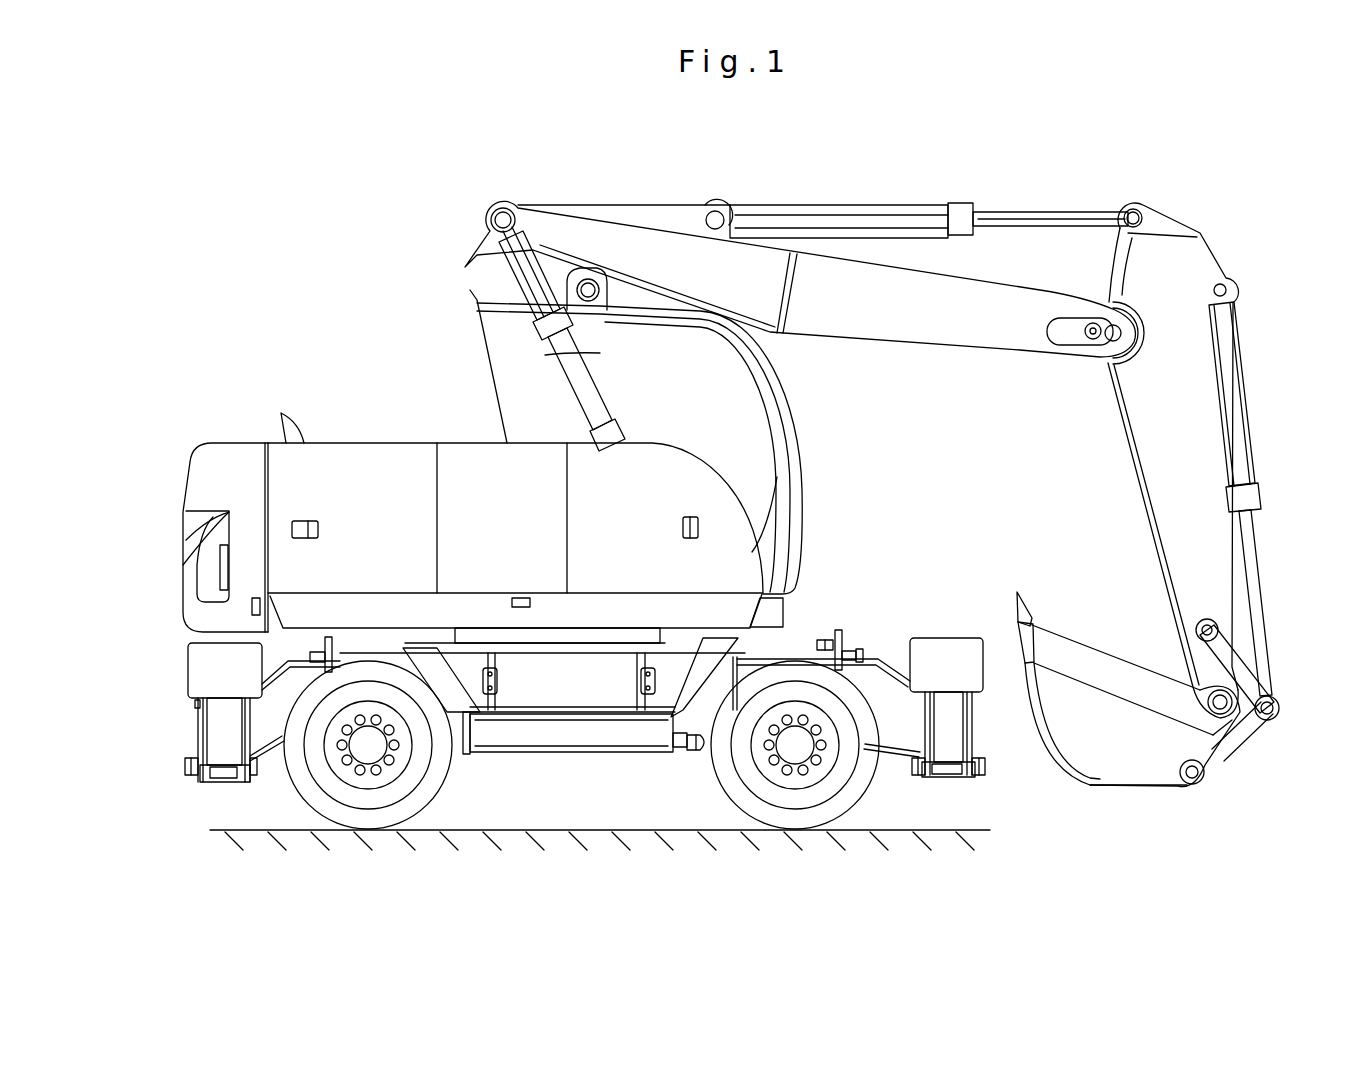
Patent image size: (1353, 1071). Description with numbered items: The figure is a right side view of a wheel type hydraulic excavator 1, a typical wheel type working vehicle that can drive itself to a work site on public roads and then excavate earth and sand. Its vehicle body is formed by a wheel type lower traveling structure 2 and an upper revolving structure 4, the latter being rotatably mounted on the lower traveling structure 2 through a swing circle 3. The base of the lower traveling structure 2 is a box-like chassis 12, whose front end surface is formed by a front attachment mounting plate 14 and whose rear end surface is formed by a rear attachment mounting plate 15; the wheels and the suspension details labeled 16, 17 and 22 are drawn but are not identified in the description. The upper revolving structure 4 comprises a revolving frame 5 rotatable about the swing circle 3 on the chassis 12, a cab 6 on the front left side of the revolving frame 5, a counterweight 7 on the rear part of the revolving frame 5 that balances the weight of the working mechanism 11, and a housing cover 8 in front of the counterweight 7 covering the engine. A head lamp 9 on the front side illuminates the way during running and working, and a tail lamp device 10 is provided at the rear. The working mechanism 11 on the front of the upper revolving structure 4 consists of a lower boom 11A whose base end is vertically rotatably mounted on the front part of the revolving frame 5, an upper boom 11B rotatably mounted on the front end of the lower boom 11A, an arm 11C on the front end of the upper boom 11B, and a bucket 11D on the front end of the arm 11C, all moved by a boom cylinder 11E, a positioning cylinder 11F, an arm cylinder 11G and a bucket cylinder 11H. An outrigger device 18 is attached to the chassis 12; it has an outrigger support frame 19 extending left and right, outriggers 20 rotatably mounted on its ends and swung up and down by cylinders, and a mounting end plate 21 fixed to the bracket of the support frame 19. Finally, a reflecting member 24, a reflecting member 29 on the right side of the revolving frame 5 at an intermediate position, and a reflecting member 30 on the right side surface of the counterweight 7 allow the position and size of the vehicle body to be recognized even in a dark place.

The wheel type hydraulic excavator 1 is at (446, 298).
The wheel type lower traveling structure 2 is at (543, 762).
The swing circle 3 is at (585, 632).
The upper revolving structure 4 is at (358, 412).
The revolving frame 5 is at (615, 613).
The cab 6 is at (752, 418).
The counterweight 7 is at (244, 468).
The housing cover 8 is at (389, 462).
The head lamp 9 is at (783, 600).
The tail lamp device 10 is at (220, 562).
The working mechanism 11 is at (860, 200).
The lower boom 11A is at (505, 338).
The upper boom 11B is at (920, 322).
The arm 11C is at (1160, 480).
The bucket 11D is at (1117, 672).
The boom cylinder 11E is at (558, 362).
The positioning cylinder 11F is at (600, 353).
The arm cylinder 11G is at (962, 203).
The bucket cylinder 11H is at (1237, 380).
The chassis 12 is at (700, 720).
The front attachment mounting plate 14 is at (843, 650).
The rear attachment mounting plate 15 is at (330, 648).
The rear wheel 16 is at (792, 815).
The front wheel 17 is at (370, 795).
The outrigger device 18 is at (965, 635).
The outrigger support frame 19 is at (901, 718).
The outrigger 20 is at (952, 728).
The mounting end plate 21 is at (856, 653).
The sensor mount 22 is at (866, 656).
The reflecting member 24 is at (826, 638).
The reflecting member 29 is at (520, 597).
The reflecting member 30 is at (250, 607).